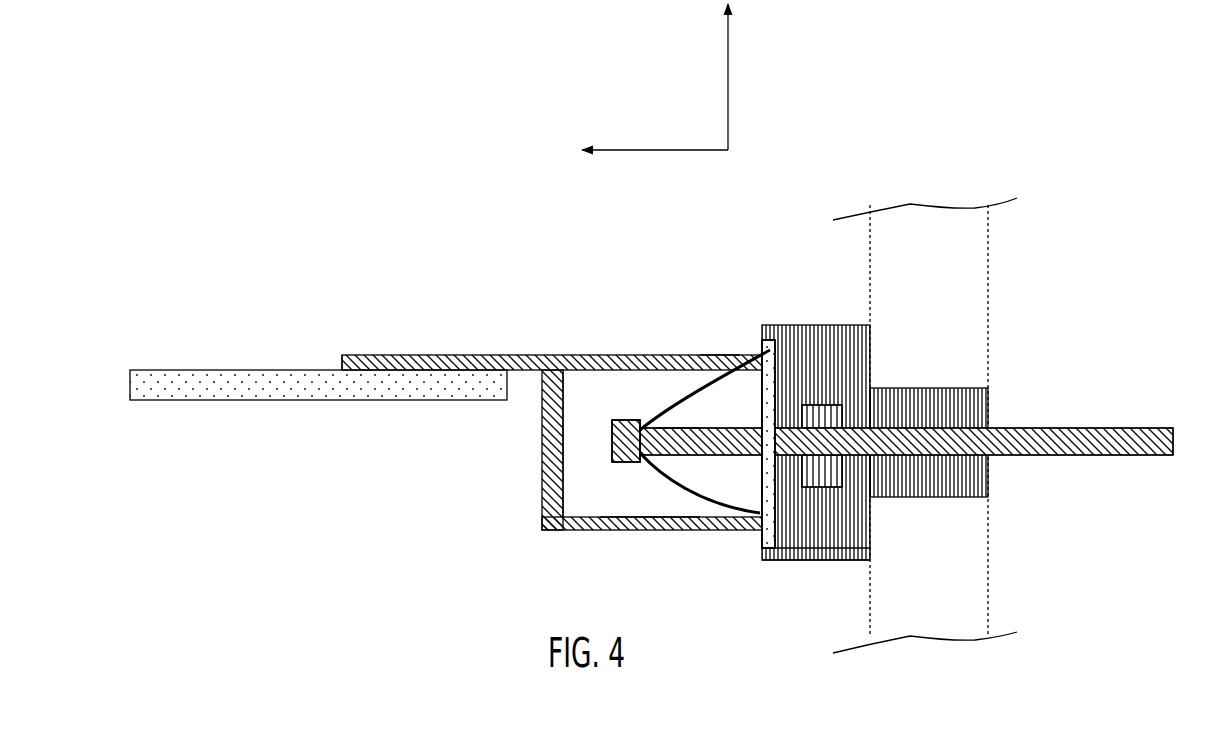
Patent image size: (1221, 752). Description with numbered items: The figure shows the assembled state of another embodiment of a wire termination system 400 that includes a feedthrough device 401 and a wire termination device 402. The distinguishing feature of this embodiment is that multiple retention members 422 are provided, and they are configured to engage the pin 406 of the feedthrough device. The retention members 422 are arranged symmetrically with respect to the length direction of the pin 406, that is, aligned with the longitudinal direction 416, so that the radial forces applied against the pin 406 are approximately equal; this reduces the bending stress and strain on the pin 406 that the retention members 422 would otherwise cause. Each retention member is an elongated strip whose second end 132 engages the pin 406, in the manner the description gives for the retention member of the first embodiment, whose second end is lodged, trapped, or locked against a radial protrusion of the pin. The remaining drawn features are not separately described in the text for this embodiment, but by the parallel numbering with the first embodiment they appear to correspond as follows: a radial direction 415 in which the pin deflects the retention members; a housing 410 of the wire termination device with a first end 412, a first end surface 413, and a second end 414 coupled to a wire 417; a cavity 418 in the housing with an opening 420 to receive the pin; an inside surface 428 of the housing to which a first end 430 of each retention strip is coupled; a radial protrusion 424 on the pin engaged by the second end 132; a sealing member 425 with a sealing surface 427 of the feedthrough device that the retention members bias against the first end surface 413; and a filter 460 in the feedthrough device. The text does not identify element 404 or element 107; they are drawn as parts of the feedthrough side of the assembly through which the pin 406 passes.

The wire termination system 400 is at (236, 134).
The first direction 415 is at (728, 100).
The longitudinal direction 416 is at (667, 150).
The substrate 417 is at (285, 401).
The carrier plate 410 is at (408, 355).
The end of carrier plate 414 is at (339, 355).
The top surface 430 is at (718, 355).
The feedthrough device 401 is at (552, 354).
The inner surface 428 is at (588, 372).
The wire termination device 402 is at (757, 323).
The panel 404 is at (947, 311).
The fastener 460 is at (818, 404).
The second end 132 is at (643, 418).
The conductor 107 is at (1078, 427).
The pin 406 is at (664, 426).
The gasket 412 is at (782, 326).
The seal 413 is at (781, 412).
The contact element 418 is at (602, 472).
The contact head 424 is at (614, 412).
The retention members 422 is at (698, 386).
The spring end 427 is at (759, 482).
The block lower portion 420 is at (760, 500).
The block bottom surface 425 is at (790, 561).